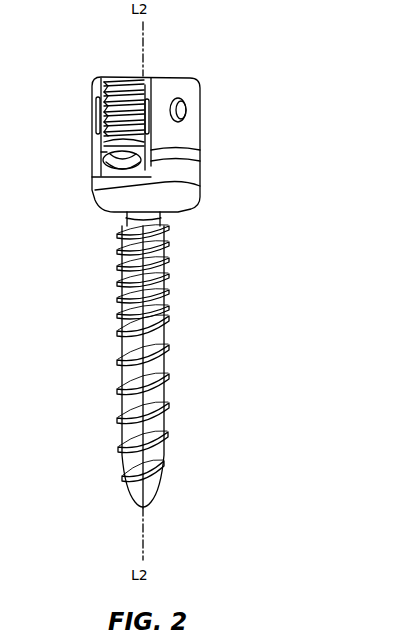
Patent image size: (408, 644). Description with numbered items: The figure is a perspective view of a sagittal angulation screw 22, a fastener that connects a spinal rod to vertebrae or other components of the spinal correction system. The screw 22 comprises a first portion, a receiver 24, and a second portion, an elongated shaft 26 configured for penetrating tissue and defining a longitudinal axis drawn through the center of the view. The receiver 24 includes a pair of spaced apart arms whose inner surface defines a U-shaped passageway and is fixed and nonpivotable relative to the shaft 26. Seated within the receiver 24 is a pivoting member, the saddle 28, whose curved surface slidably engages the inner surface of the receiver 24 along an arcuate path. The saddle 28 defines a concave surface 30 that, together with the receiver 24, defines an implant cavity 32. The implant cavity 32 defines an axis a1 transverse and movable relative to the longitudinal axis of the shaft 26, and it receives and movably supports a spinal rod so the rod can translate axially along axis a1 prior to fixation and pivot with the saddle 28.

The sagittal angulation screw 22 is at (245, 314).
The receiver 24 is at (220, 199).
The elongated shaft 26 is at (103, 362).
The saddle 28 is at (110, 167).
The concave surface 30 is at (107, 150).
The implant cavity 32 is at (108, 103).
The axis of implant cavity a1 is at (107, 152).